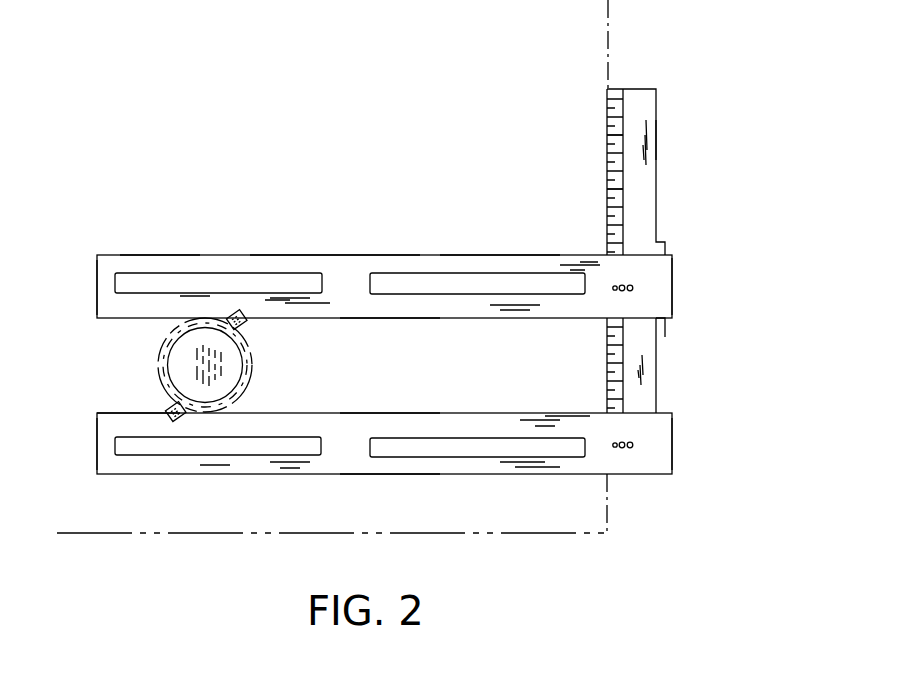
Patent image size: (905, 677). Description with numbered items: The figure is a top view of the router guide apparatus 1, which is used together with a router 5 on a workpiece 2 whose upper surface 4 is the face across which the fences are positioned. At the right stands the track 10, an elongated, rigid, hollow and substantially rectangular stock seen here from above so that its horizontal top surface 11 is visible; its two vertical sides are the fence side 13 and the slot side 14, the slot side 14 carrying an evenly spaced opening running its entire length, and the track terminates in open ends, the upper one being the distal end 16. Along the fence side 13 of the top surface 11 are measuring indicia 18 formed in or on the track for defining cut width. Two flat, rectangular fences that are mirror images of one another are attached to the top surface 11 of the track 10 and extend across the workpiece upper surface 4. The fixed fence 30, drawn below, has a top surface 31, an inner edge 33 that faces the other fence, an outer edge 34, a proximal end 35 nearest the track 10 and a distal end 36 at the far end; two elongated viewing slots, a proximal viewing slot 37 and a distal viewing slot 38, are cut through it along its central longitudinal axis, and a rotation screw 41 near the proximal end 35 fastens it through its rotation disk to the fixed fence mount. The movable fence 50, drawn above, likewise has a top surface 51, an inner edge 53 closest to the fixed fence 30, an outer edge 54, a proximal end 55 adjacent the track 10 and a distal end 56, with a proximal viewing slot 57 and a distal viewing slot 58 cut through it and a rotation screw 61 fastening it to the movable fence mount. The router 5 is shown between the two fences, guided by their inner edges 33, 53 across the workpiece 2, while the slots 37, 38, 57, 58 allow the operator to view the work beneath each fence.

The router guide apparatus 1 is at (123, 163).
The workpiece 2 is at (372, 173).
The upper surface 4 is at (272, 163).
The router 5 is at (253, 362).
The track 10 is at (643, 97).
The top surface 11 is at (650, 172).
The fence side 13 is at (607, 143).
The slot side 14 is at (657, 138).
The distal end 16 is at (633, 88).
The measuring indicia 18 is at (607, 193).
The fixed fence 30 is at (143, 474).
The top surface 31 is at (352, 439).
The inner edge 33 is at (392, 413).
The outer edge 34 is at (378, 474).
The proximal end 35 is at (672, 447).
The distal end 36 is at (97, 445).
The proximal viewing slot 37 is at (490, 440).
The distal viewing slot 38 is at (258, 447).
The rotation screw 41 is at (622, 448).
The movable fence 50 is at (112, 255).
The top surface 51 is at (348, 265).
The inner edge 53 is at (383, 318).
The outer edge 54 is at (277, 255).
The proximal end 55 is at (672, 307).
The distal end 56 is at (97, 292).
The proximal viewing slot 57 is at (462, 280).
The distal viewing slot 58 is at (177, 281).
The rotation screw 61 is at (625, 285).